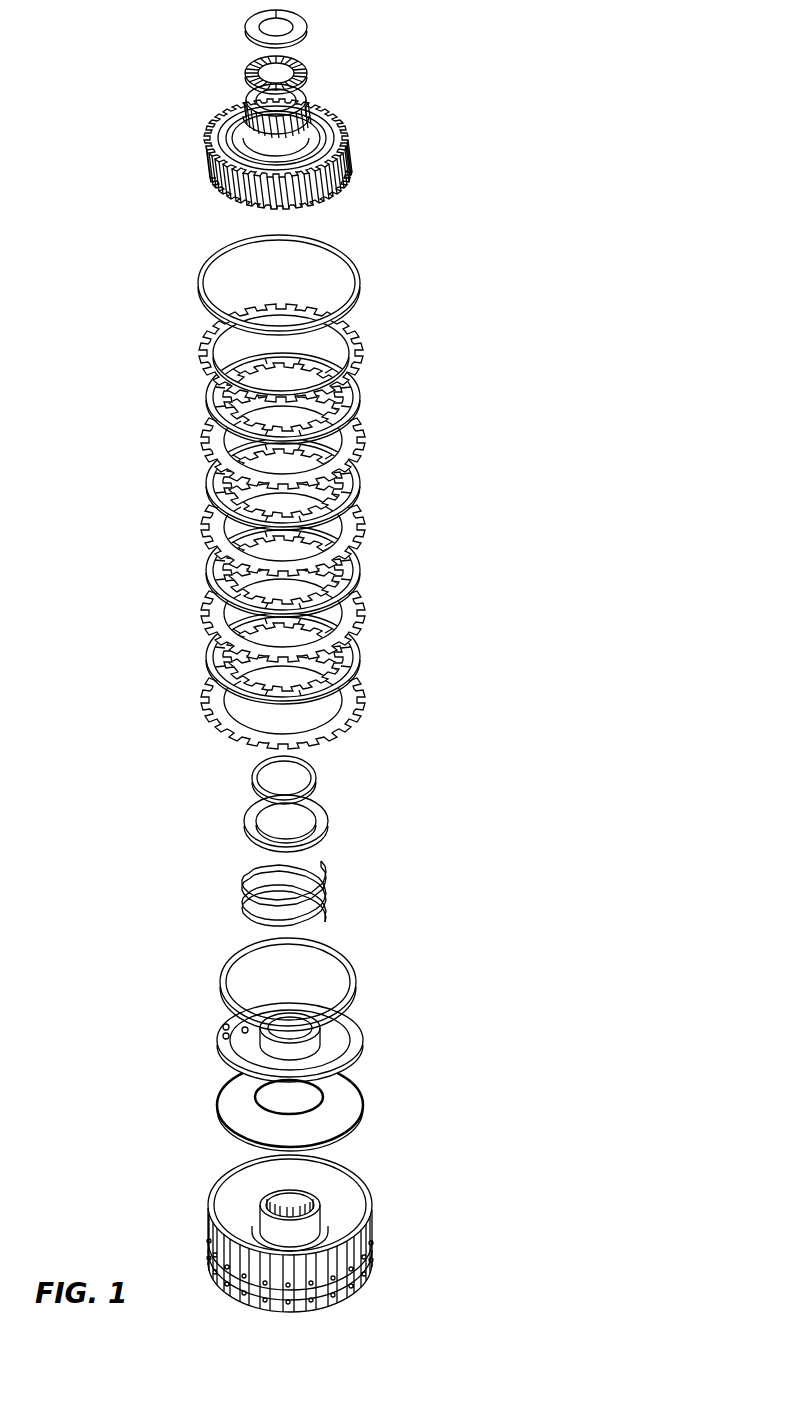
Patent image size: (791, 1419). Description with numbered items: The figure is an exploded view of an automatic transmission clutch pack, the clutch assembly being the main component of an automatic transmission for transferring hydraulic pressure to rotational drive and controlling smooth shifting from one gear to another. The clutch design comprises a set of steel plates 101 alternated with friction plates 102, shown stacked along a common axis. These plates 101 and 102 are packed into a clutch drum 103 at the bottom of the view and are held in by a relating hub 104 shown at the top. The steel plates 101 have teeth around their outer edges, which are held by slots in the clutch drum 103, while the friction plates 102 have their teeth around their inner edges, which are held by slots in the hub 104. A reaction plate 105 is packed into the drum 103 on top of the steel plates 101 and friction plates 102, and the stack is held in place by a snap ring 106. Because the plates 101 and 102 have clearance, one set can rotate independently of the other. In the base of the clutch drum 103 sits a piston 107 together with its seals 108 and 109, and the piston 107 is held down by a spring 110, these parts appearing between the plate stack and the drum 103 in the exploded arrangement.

The steel plates 101 is at (200, 700).
The friction plates 102 is at (358, 657).
The clutch drum 103 is at (372, 1225).
The hub 104 is at (205, 150).
The reaction plate 105 is at (358, 338).
The snap ring 106 is at (333, 247).
The piston 107 is at (215, 1030).
The seal 108 is at (255, 1098).
The seal 109 is at (362, 1100).
The spring 110 is at (330, 895).